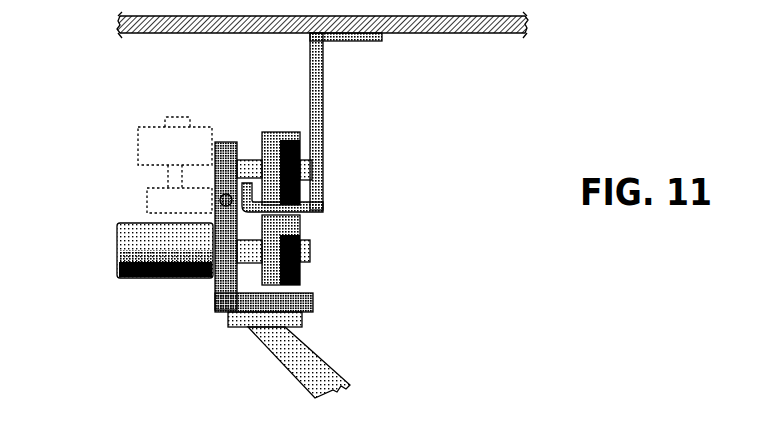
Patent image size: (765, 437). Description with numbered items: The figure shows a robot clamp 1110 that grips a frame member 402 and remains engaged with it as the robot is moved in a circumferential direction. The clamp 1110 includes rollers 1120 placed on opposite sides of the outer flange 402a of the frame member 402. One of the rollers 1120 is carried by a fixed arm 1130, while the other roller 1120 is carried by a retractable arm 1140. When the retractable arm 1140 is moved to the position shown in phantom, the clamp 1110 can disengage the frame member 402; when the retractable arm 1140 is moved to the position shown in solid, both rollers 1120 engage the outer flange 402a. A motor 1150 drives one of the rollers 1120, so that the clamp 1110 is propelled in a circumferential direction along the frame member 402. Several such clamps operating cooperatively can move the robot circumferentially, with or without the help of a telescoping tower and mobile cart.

The frame member 402 is at (323, 156).
The outer flange 402a is at (307, 217).
The clamp 1110 is at (235, 241).
The rollers 1120 is at (283, 132).
The fixed arm 1130 is at (313, 303).
The retractable arm 1140 is at (223, 142).
The motor 1150 is at (138, 223).